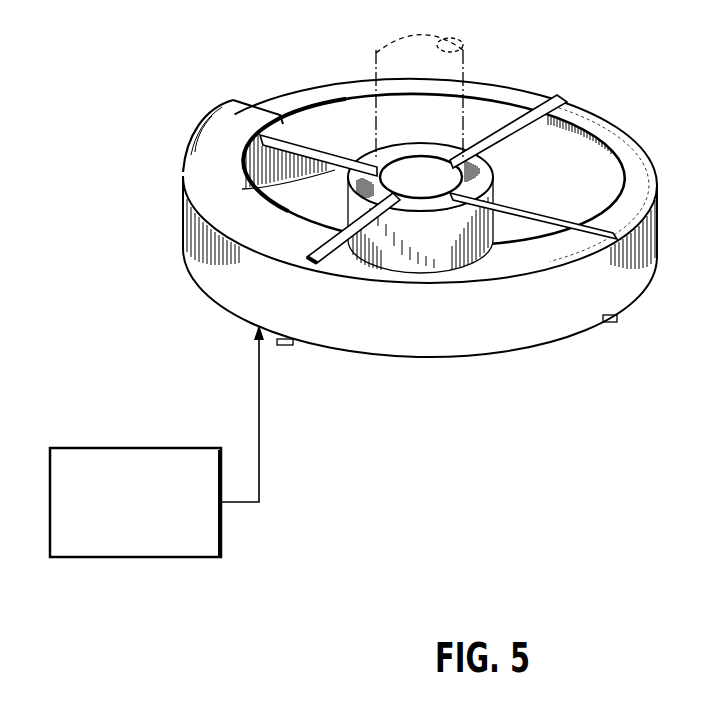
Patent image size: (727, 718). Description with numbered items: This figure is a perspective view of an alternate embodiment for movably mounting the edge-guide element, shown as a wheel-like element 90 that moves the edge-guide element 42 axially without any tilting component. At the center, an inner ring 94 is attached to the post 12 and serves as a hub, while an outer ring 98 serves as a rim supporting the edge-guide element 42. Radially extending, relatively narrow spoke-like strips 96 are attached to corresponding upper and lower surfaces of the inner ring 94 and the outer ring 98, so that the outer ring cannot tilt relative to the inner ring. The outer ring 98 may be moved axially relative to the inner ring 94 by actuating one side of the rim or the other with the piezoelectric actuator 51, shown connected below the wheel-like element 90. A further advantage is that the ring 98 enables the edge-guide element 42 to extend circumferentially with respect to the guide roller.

The wheel-like element 90 is at (220, 74).
The outer ring 98 is at (619, 138).
The edge-guide element 42 is at (203, 165).
The inner ring 94 is at (330, 171).
The spoke-like strips 96 is at (528, 102).
The post 12 is at (383, 63).
The piezoelectric actuator 51 is at (163, 447).